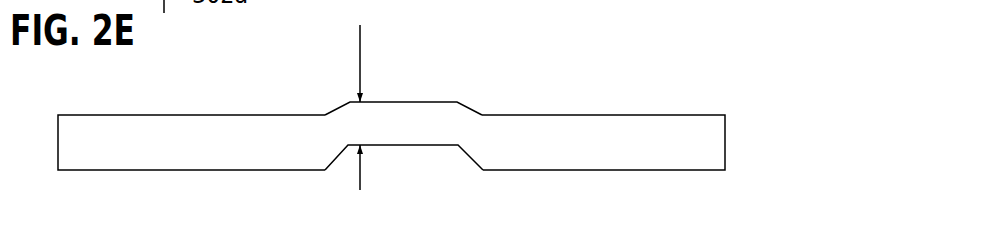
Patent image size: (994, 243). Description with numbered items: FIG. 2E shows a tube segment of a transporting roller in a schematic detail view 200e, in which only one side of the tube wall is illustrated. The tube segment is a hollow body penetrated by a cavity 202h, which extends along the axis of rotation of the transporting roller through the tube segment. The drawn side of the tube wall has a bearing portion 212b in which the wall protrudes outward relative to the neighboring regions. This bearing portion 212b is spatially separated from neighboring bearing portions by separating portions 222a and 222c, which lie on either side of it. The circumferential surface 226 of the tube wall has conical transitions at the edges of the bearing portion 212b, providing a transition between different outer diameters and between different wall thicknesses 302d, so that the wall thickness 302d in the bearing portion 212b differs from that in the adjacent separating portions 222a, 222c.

The view 200e is at (736, 58).
The cavity 202h is at (232, 203).
The separating portion 222a is at (191, 142).
The bearing portion 212b is at (404, 136).
The separating portion 222c is at (603, 142).
The circumferential surface 226 is at (409, 66).
The wall thickness 302d is at (361, 173).